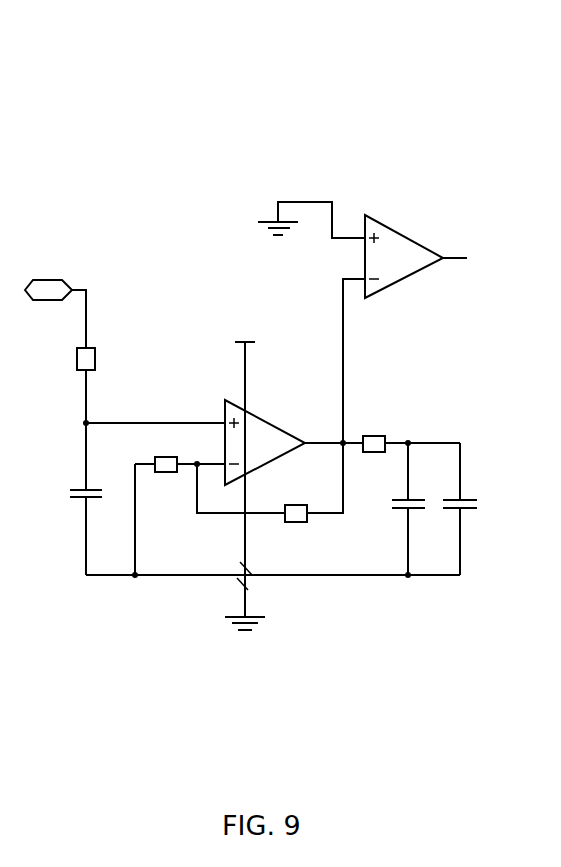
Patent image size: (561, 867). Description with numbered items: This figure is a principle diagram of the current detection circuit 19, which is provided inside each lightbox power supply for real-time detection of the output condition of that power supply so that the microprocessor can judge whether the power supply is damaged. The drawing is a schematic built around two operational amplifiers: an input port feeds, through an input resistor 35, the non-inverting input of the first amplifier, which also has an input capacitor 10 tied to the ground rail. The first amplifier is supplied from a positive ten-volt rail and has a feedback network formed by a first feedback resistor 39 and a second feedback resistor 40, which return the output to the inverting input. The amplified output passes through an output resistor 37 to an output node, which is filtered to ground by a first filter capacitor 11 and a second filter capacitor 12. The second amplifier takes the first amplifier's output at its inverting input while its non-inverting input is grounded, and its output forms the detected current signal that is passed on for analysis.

The current detection circuit 19 is at (179, 203).
The resistor R35 35 is at (101, 359).
The alternating-current input parameter detection circuit 10 is at (94, 504).
The resistor R39 39 is at (166, 456).
The resistor R40 40 is at (295, 506).
The resistor R37 37 is at (374, 435).
The signal conversion circuit 11 is at (415, 513).
The first supply circuit 12 is at (467, 513).